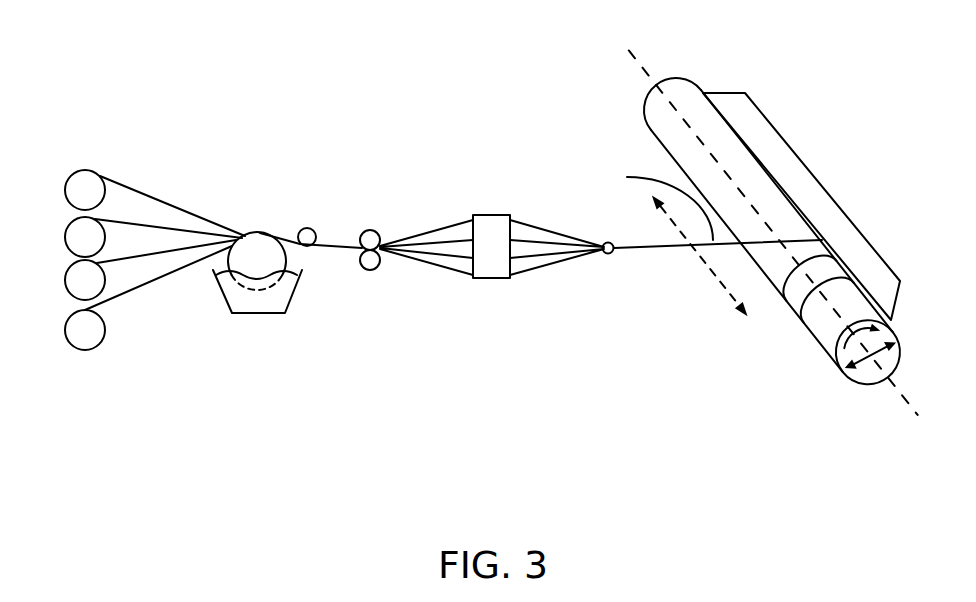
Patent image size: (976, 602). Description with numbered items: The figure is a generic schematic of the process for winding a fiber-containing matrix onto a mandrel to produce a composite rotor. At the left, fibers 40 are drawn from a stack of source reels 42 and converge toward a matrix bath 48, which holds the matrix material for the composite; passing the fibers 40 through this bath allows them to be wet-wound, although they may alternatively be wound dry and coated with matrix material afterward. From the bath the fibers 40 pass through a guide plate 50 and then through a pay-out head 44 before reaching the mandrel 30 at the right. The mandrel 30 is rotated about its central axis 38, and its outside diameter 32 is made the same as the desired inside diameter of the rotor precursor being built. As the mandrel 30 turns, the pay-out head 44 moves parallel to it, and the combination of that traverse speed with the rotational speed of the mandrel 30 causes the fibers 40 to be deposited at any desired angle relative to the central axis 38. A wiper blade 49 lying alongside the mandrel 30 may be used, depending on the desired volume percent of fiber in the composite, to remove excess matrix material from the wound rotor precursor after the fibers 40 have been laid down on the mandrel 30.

The mandrel 30 is at (687, 108).
The outside diameter 32 is at (866, 362).
The central axis 38 is at (645, 72).
The fibers 40 is at (628, 177).
The source reels 42 is at (80, 185).
The pay-out head 44 is at (607, 255).
The matrix bath 48 is at (250, 300).
The wiper blade 49 is at (790, 172).
The guide plate 50 is at (492, 267).